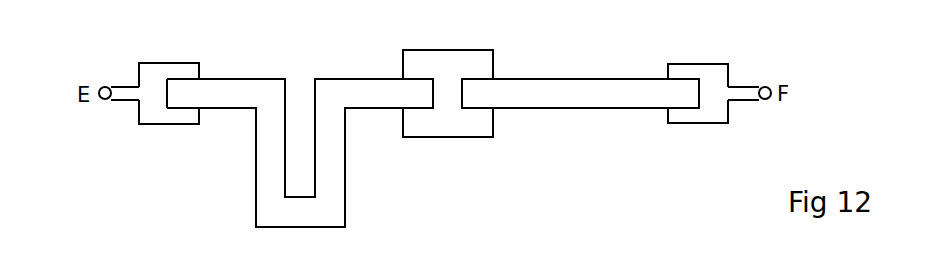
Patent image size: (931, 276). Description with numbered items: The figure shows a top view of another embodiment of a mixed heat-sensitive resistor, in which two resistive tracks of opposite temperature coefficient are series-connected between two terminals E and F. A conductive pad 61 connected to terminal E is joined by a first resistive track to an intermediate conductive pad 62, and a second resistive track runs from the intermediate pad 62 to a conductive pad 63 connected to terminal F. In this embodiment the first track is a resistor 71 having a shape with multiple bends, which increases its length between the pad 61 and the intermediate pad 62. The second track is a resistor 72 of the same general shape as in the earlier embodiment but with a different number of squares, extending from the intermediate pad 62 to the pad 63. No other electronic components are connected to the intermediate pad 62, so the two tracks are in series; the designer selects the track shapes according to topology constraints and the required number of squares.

The conductive pad 61 is at (169, 71).
The intermediate conductive pad 62 is at (438, 68).
The conductive pad 63 is at (708, 70).
The resistor 71 is at (261, 88).
The resistor 72 is at (599, 86).